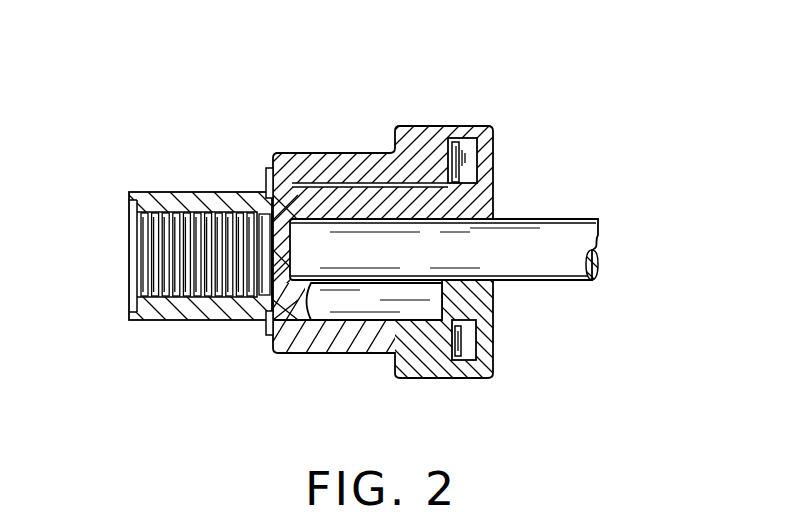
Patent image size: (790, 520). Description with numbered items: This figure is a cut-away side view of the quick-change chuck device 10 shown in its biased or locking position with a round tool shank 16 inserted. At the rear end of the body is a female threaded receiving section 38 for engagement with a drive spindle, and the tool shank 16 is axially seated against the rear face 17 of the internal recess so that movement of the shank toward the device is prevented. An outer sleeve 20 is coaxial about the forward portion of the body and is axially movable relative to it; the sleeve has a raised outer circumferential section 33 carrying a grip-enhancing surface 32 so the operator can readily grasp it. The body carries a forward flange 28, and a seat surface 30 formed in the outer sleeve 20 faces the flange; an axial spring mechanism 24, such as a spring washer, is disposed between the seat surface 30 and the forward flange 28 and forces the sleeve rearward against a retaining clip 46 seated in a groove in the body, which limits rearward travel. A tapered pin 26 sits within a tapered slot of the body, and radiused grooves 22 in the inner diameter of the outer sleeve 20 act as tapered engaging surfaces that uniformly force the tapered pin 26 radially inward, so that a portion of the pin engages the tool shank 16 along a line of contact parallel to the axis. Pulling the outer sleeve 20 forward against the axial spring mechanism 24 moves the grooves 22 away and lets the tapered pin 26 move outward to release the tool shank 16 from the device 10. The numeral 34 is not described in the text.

The quick-change chuck device 10 is at (356, 64).
The tool shank 16 is at (588, 242).
The rear face 17 is at (263, 313).
The outer sleeve 20 is at (338, 153).
The radiused grooves 22 is at (294, 184).
The axial spring mechanism 24 is at (458, 163).
The tapered pin 26 is at (326, 310).
The forward flange 28 is at (483, 203).
The seat surface 30 is at (440, 377).
The grip-enhancing surface 32 is at (440, 127).
The raised outer circumferential section 33 is at (397, 362).
The nut 34 is at (105, 234).
The female threaded receiving section 38 is at (188, 322).
The retaining clip 46 is at (266, 182).